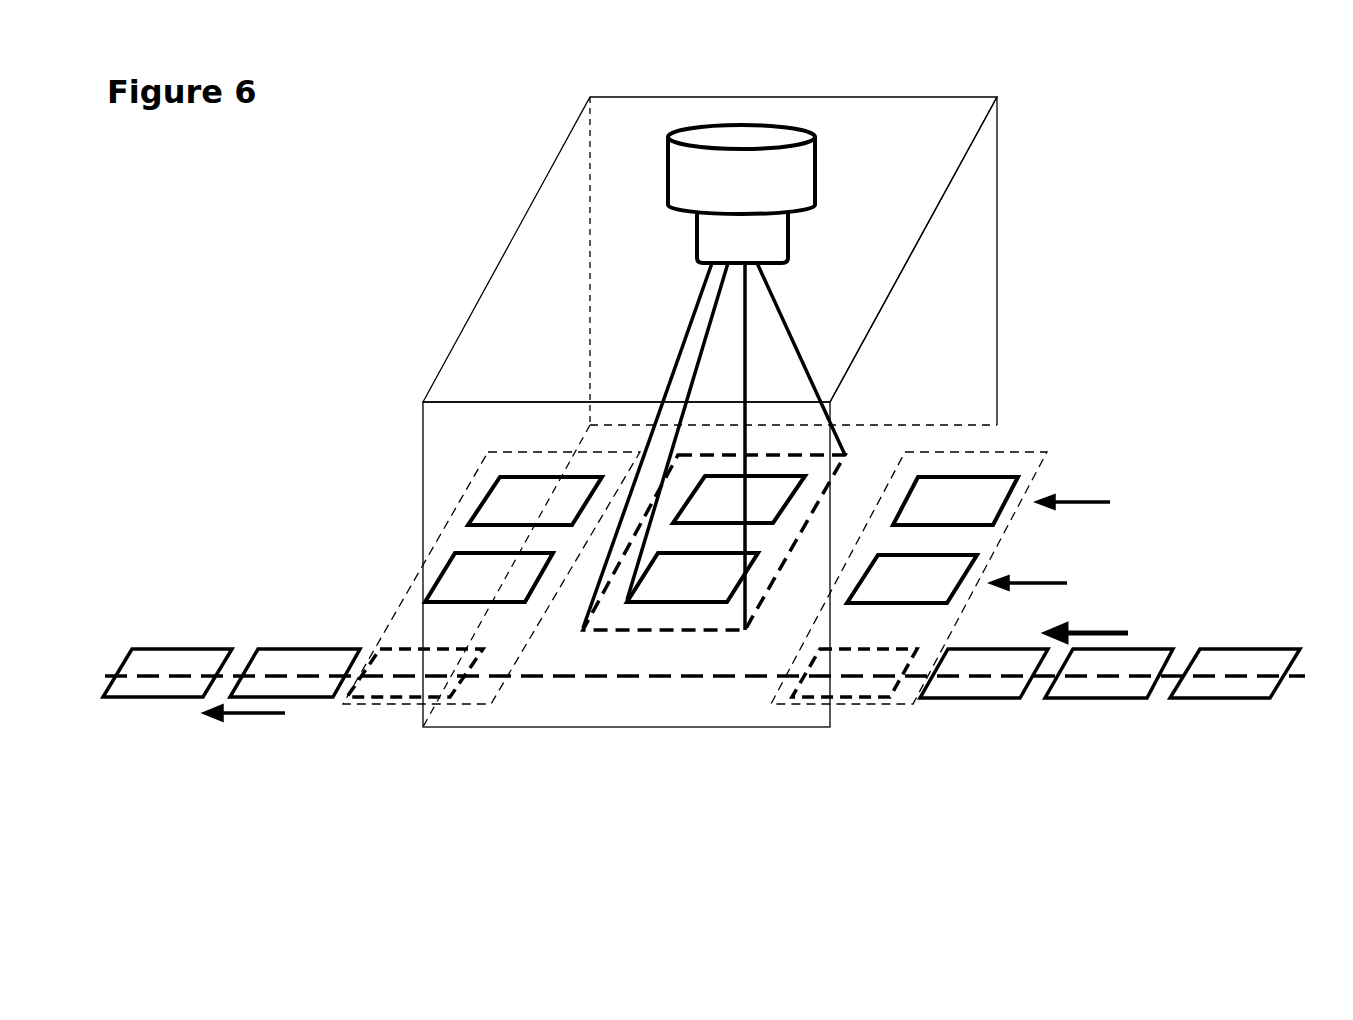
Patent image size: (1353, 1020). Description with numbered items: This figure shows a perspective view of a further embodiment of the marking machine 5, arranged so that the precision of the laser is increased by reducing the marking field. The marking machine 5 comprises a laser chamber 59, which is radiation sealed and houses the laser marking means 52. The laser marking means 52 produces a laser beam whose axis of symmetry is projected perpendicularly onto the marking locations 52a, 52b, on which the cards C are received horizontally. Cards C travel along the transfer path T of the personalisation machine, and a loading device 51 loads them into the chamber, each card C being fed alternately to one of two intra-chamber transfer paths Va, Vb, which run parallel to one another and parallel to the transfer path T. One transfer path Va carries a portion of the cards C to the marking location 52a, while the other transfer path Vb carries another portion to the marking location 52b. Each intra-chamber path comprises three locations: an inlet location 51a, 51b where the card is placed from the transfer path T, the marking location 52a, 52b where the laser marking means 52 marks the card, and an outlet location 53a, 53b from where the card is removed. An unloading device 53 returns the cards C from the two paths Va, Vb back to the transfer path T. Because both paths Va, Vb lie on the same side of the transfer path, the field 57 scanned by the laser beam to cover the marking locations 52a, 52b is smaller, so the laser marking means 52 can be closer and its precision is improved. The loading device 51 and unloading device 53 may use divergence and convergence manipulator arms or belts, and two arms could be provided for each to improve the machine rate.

The marking machine 5 is at (513, 205).
The laser chamber 59 is at (970, 290).
The laser marking means 52 is at (793, 187).
The first marking location 52a is at (758, 493).
The second marking location 52b is at (680, 580).
The field 57 is at (612, 628).
The unloading device 53 is at (493, 463).
The first outlet location 53a is at (515, 498).
The second outlet location 53b is at (475, 585).
The loading device 51 is at (838, 690).
The first inlet location 51a is at (988, 492).
The second inlet location 51b is at (937, 575).
The first intra-chamber transfer path Va is at (1088, 496).
The second intra-chamber transfer path Vb is at (1039, 575).
The transfer path T is at (1087, 625).
The card C is at (330, 667).